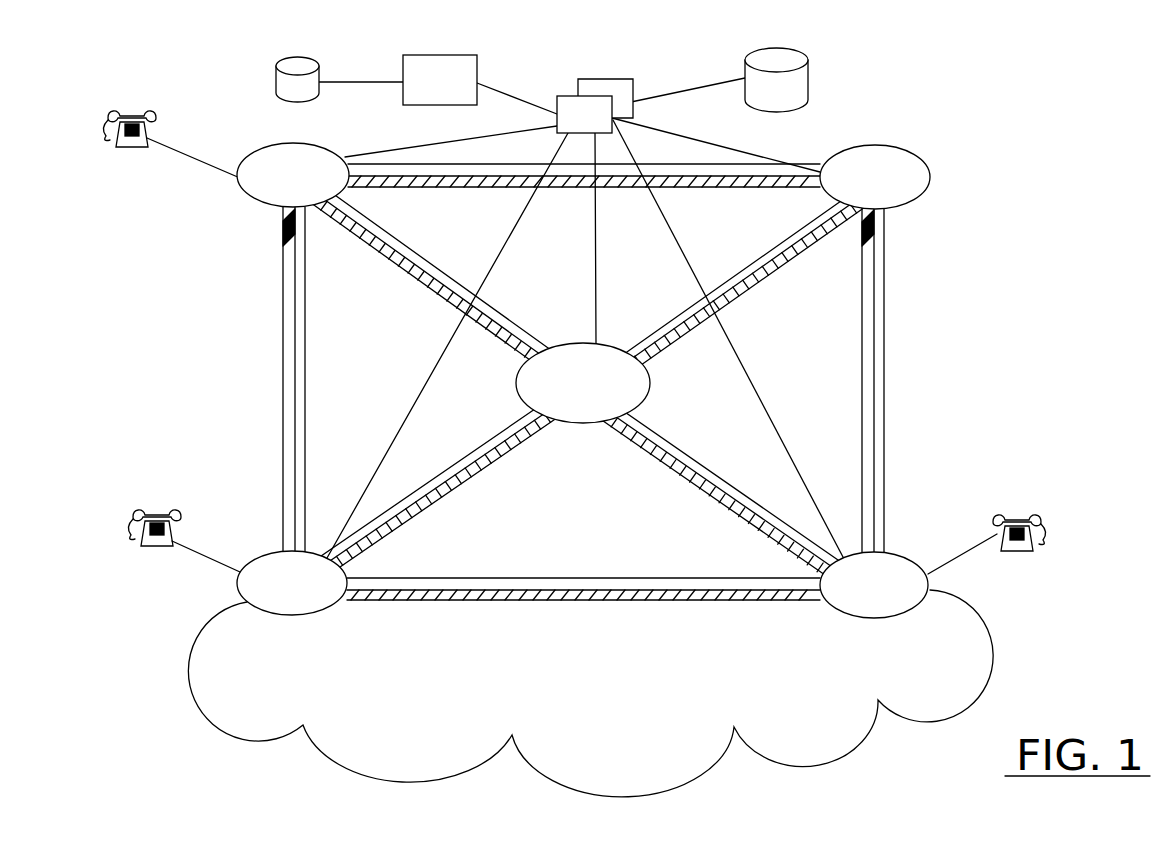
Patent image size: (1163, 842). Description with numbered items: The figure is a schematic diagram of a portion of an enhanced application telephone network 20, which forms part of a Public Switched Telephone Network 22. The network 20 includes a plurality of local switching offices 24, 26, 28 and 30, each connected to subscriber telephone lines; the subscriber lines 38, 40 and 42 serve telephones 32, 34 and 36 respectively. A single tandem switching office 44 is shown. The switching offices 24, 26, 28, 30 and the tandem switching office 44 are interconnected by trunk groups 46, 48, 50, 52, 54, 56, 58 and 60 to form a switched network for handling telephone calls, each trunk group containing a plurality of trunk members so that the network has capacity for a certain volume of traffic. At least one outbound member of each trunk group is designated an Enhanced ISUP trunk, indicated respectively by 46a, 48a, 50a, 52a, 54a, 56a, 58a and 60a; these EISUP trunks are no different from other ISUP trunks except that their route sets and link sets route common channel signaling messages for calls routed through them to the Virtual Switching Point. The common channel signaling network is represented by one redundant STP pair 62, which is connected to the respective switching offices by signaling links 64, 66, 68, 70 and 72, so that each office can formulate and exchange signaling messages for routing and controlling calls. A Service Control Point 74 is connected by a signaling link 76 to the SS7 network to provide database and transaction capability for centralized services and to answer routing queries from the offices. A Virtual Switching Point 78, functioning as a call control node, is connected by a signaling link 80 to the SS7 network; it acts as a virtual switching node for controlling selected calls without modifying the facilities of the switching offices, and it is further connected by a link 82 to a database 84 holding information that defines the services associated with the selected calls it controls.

The enhanced application telephone network 20 is at (1010, 323).
The Public Switched Telephone Network 22 is at (998, 655).
The switching office 24 is at (330, 608).
The switching office 26 is at (292, 143).
The switching office 28 is at (908, 150).
The switching office 30 is at (832, 610).
The telephone 32 is at (128, 520).
The telephone 34 is at (102, 128).
The telephone 36 is at (1042, 528).
The subscriber telephone line 38 is at (230, 563).
The subscriber telephone line 40 is at (183, 152).
The subscriber telephone line 42 is at (937, 566).
The tandem switching office 44 is at (577, 423).
The trunk group 46 is at (305, 338).
The Enhanced ISUP trunk 46a is at (283, 333).
The trunk group 48 is at (502, 164).
The Enhanced ISUP trunk 48a is at (573, 190).
The trunk group 50 is at (884, 342).
The Enhanced ISUP trunk 50a is at (862, 334).
The trunk group 52 is at (577, 578).
The Enhanced ISUP trunk 52a is at (575, 600).
The trunk group 54 is at (478, 448).
The Enhanced ISUP trunk 54a is at (468, 482).
The trunk group 56 is at (447, 270).
The Enhanced ISUP trunk 56a is at (388, 257).
The trunk group 58 is at (722, 282).
The Enhanced ISUP trunk 58a is at (790, 255).
The trunk group 60 is at (705, 462).
The Enhanced ISUP trunk 60a is at (695, 485).
The STP pair 62 is at (595, 79).
The signaling link 64 is at (376, 150).
The signaling link 66 is at (436, 365).
The signaling link 68 is at (597, 250).
The signaling link 70 is at (760, 398).
The signaling link 72 is at (704, 140).
The Service Control Point 74 is at (810, 74).
The signaling link 76 is at (662, 97).
The Virtual Switching Point 78 is at (448, 55).
The signaling link 80 is at (500, 91).
The link 82 is at (362, 84).
The database 84 is at (303, 58).